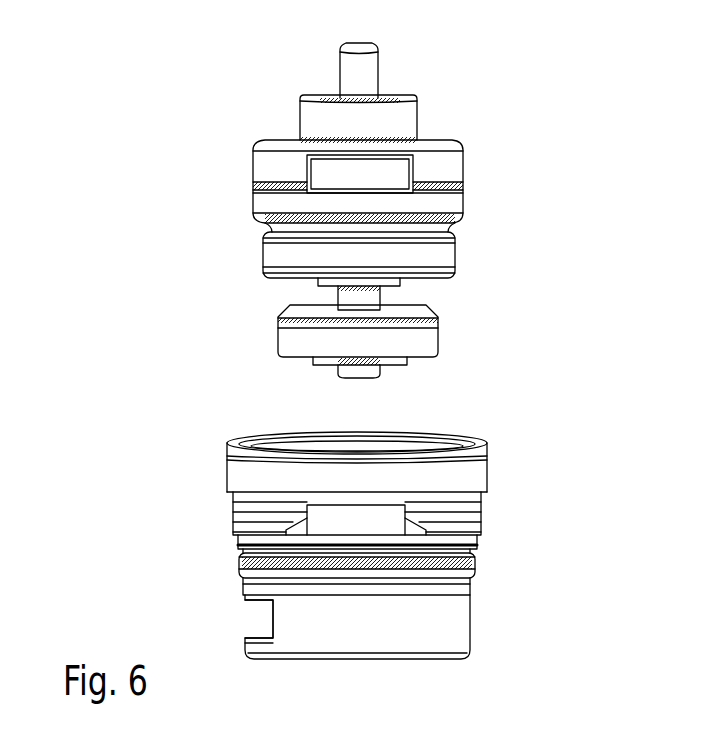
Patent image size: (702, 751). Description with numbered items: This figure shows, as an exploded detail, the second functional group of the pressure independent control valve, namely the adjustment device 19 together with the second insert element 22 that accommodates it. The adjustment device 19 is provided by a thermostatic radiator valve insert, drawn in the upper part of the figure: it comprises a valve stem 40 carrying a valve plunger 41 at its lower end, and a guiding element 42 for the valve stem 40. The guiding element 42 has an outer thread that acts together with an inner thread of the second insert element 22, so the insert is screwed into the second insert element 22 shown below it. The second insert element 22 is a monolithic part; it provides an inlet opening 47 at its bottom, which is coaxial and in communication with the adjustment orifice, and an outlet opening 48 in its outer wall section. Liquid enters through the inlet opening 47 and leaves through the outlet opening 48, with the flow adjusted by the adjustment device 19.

The adjustment device 19 is at (239, 42).
The valve stem 40 is at (363, 72).
The valve plunger 41 is at (427, 340).
The guiding element 42 is at (447, 202).
The second insert element 22 is at (371, 582).
The inlet opening 47 is at (400, 662).
The outlet opening 48 is at (243, 617).